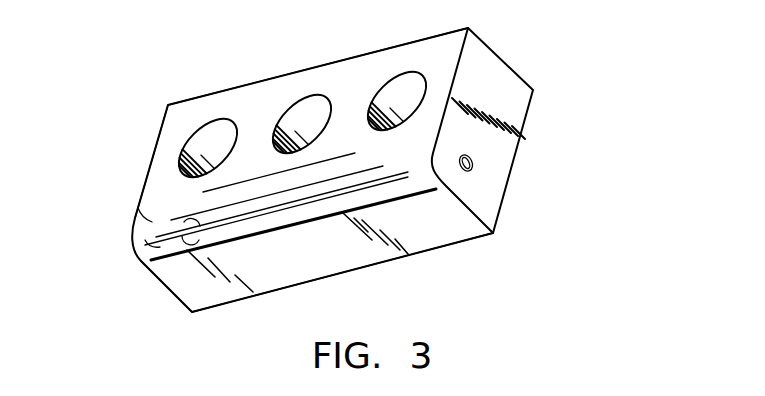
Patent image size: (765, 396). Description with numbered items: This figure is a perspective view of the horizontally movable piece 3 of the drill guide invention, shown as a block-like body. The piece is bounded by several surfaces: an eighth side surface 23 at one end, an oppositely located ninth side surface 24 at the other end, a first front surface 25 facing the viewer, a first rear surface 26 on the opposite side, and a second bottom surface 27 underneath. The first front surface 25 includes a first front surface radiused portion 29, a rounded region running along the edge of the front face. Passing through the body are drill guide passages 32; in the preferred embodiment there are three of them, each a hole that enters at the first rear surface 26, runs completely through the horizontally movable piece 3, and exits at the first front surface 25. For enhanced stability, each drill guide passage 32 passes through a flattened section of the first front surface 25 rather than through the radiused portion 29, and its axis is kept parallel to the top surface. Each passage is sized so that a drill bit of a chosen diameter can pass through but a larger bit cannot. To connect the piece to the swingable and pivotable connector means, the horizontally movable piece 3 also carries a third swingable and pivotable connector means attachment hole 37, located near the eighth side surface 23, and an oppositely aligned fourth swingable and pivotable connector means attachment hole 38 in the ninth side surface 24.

The horizontally movable piece 3 is at (338, 159).
The eighth side surface 23 is at (338, 159).
The ninth side surface 24 is at (498, 144).
The first front surface 25 is at (258, 98).
The first rear surface 26 is at (538, 98).
The second bottom surface 27 is at (346, 259).
The first front surface radiused portion 29 is at (254, 207).
The drill guide passage 32 is at (393, 87).
The third swingable and pivotable connector means attachment hole 37 is at (125, 208).
The fourth swingable and pivotable connector means attachment hole 38 is at (473, 169).